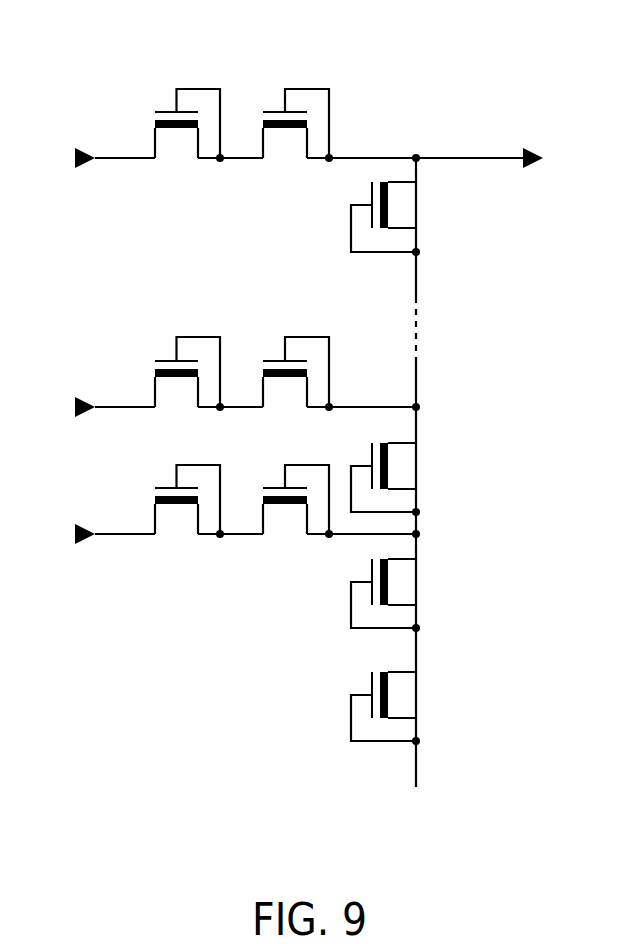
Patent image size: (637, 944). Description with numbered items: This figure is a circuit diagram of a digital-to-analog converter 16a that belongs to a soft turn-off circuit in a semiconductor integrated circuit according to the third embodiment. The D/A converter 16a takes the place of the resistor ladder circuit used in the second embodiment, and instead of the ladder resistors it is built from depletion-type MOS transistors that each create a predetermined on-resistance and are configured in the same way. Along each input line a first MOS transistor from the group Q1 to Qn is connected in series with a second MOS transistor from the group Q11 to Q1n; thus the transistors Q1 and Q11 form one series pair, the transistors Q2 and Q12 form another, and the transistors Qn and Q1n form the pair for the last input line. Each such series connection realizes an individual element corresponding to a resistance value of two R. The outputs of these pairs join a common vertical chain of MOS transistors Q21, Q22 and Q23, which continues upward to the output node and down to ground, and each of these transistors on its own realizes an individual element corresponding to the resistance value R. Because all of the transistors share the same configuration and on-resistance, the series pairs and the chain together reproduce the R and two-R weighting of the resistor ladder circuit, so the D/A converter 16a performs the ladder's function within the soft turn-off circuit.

The D/A converter 16a is at (476, 64).
The MOS transistor Qn is at (187, 107).
The MOS transistor Q1n is at (293, 107).
The MOS transistor Q2 is at (187, 356).
The MOS transistor Q12 is at (293, 356).
The MOS transistor Q1 is at (187, 483).
The MOS transistor Q11 is at (293, 483).
The MOS transistor Q23 is at (411, 477).
The MOS transistor Q22 is at (411, 593).
The MOS transistor Q21 is at (411, 706).